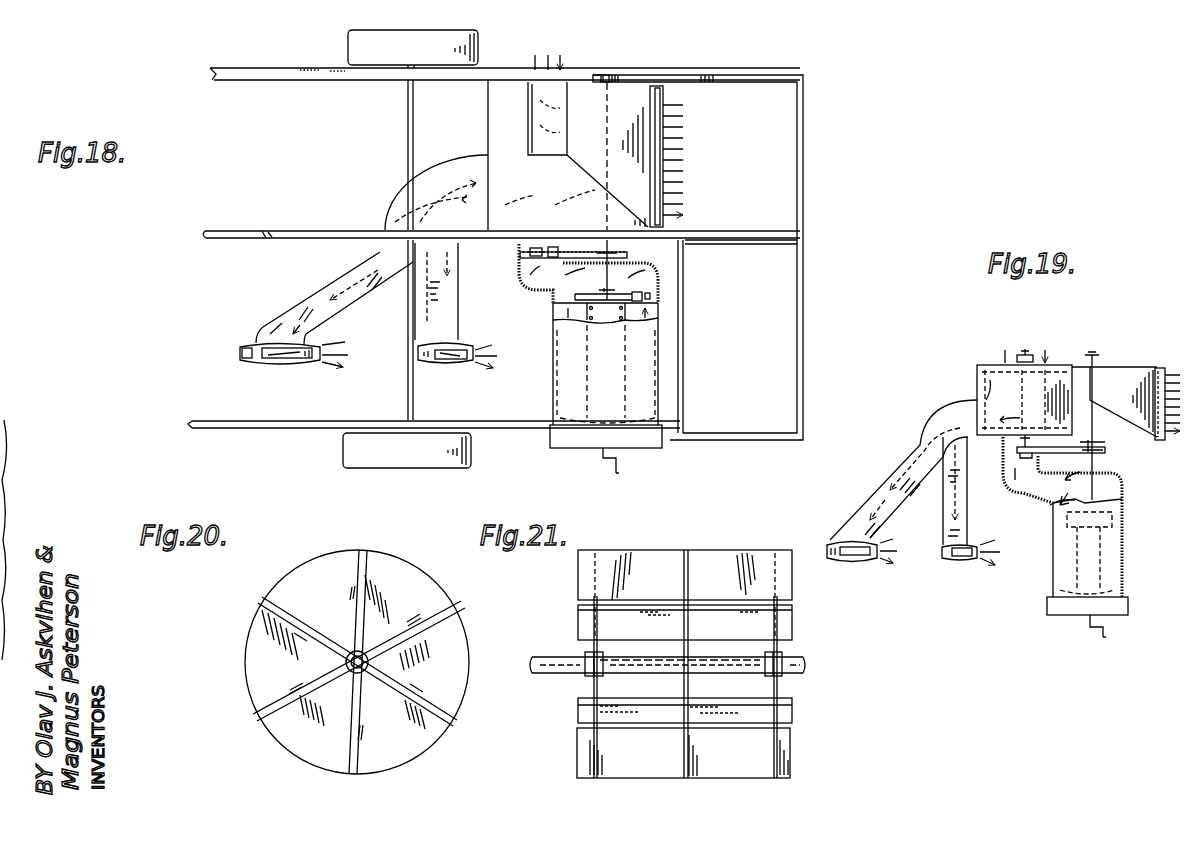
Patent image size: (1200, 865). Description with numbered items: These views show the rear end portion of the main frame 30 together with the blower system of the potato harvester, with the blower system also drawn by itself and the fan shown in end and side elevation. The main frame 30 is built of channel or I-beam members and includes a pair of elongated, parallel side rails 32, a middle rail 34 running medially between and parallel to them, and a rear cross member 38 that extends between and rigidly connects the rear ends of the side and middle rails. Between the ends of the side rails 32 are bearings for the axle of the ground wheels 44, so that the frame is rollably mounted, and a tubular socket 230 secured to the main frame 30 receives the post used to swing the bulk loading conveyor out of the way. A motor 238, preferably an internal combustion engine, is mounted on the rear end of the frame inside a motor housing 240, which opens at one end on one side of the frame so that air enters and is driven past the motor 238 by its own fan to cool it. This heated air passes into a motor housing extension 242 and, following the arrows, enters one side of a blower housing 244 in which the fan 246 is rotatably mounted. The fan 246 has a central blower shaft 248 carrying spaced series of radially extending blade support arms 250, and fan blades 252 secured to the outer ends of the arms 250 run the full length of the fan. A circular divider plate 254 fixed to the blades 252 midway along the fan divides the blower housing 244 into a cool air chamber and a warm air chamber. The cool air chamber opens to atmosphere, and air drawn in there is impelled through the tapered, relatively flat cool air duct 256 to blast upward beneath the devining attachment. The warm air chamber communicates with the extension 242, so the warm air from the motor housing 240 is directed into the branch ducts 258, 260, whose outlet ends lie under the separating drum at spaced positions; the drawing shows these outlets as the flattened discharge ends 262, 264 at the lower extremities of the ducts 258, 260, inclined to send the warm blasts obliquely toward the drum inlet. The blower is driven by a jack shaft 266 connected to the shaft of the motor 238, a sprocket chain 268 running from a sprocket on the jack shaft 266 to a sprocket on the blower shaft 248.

In FIG. 18, the main frame 30 is at (186, 418).
In FIG. 18, the side rails 32 is at (228, 82).
In FIG. 18, the middle rail 34 is at (206, 233).
In FIG. 18, the rear cross member 38 is at (804, 178).
In FIG. 18, the ground wheels 44 is at (372, 42).
In FIG. 18, the tubular socket 230 is at (268, 228).
In FIG. 18, the motor 238 is at (615, 322).
In FIG. 19, the motor 238 is at (1100, 540).
In FIG. 18, the motor housing 240 is at (659, 314).
In FIG. 19, the motor housing 240 is at (1119, 503).
In FIG. 18, the motor housing extension 242 is at (543, 295).
In FIG. 19, the motor housing extension 242 is at (1017, 488).
In FIG. 18, the blower housing 244 is at (488, 117).
In FIG. 19, the blower housing 244 is at (991, 365).
In FIG. 19, the fan 246 is at (985, 387).
In FIG. 20, the fan 246 is at (279, 574).
In FIG. 21, the fan 246 is at (630, 533).
In FIG. 18, the blower shaft 248 is at (522, 250).
In FIG. 19, the blower shaft 248 is at (1027, 355).
In FIG. 20, the blower shaft 248 is at (353, 672).
In FIG. 21, the blower shaft 248 is at (805, 666).
In FIG. 20, the blade support arms 250 is at (335, 606).
In FIG. 21, the blade support arms 250 is at (593, 686).
In FIG. 20, the fan blades 252 is at (357, 555).
In FIG. 21, the fan blades 252 is at (753, 560).
In FIG. 19, the divider plate 254 is at (985, 396).
In FIG. 20, the divider plate 254 is at (248, 670).
In FIG. 21, the divider plate 254 is at (690, 560).
In FIG. 18, the cool air duct 256 is at (640, 92).
In FIG. 19, the cool air duct 256 is at (1134, 373).
In FIG. 18, the branch duct 258 is at (326, 290).
In FIG. 19, the branch duct 258 is at (897, 477).
In FIG. 18, the branch duct 260 is at (459, 291).
In FIG. 19, the branch duct 260 is at (948, 521).
In FIG. 18, the discharge nozzle 262 is at (277, 365).
In FIG. 19, the discharge nozzle 262 is at (862, 560).
In FIG. 18, the discharge nozzle 264 is at (453, 367).
In FIG. 19, the discharge nozzle 264 is at (952, 561).
In FIG. 18, the jack shaft 266 is at (615, 251).
In FIG. 19, the jack shaft 266 is at (1097, 461).
In FIG. 18, the sprocket chain 268 is at (578, 251).
In FIG. 19, the sprocket chain 268 is at (1046, 447).